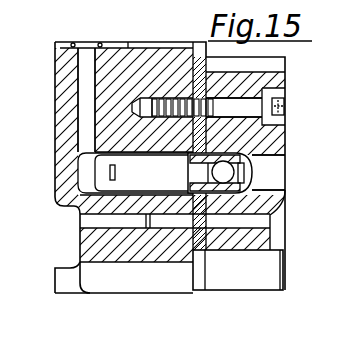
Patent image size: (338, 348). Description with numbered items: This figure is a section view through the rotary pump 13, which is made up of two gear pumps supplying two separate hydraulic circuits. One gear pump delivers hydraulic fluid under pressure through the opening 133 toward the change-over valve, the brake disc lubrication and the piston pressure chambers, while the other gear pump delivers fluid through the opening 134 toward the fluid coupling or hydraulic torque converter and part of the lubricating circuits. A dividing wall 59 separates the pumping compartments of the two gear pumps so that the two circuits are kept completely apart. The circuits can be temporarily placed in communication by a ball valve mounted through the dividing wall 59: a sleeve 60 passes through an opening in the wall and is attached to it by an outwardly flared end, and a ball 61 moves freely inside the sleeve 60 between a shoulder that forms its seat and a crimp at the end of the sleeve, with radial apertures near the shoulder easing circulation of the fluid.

The rotary pump 13 is at (55, 133).
The opening 134 is at (88, 60).
The opening 133 is at (274, 176).
The dividing wall 59 is at (202, 57).
The sleeve 60 is at (225, 184).
The ball 61 is at (238, 190).